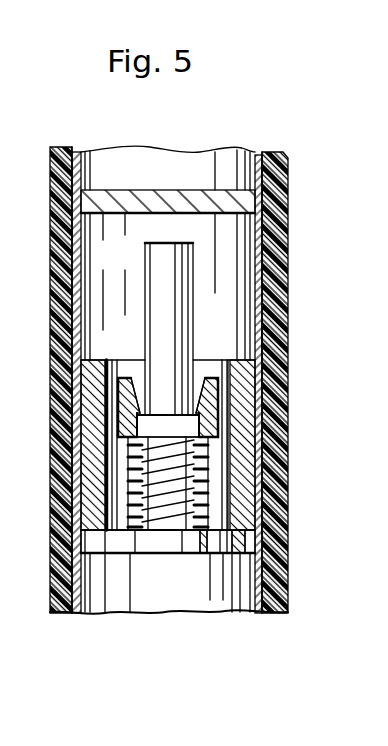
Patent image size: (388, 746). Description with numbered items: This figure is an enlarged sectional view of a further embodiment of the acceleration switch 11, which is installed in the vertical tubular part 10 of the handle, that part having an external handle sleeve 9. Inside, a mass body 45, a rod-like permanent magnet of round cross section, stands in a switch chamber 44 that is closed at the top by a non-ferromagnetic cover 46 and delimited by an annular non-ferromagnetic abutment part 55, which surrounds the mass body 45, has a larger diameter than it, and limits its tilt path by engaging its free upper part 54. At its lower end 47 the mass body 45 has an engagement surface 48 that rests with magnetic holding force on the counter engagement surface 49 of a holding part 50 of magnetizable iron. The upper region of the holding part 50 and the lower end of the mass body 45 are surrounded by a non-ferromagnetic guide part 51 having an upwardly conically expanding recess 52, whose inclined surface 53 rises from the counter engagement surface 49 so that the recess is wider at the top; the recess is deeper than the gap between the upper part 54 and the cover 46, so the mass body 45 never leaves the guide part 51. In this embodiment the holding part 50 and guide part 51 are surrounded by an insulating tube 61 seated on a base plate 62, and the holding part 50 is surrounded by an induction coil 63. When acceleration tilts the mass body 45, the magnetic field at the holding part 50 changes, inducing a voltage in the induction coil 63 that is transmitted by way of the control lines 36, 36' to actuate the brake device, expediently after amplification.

The handle sleeve 9 is at (280, 185).
The vertical tubular part 10 is at (258, 155).
The acceleration switch 11 is at (322, 149).
The cover 46 is at (193, 203).
The switch chamber 44 is at (225, 283).
The abutment part 55 is at (258, 246).
The mass body 45 is at (174, 305).
The upper part 54 is at (163, 252).
The insulating tube 61 is at (240, 367).
The inclined surface 53 is at (215, 393).
The counter engagement surface 49 is at (130, 408).
The guide part 51 is at (206, 410).
The recess 52 is at (200, 378).
The lower end 47 is at (160, 408).
The holding part 50 is at (165, 424).
The engagement surface 48 is at (193, 422).
The induction coil 63 is at (205, 472).
The base plate 62 is at (243, 542).
The control line 36 is at (147, 582).
The control line 36' is at (245, 606).